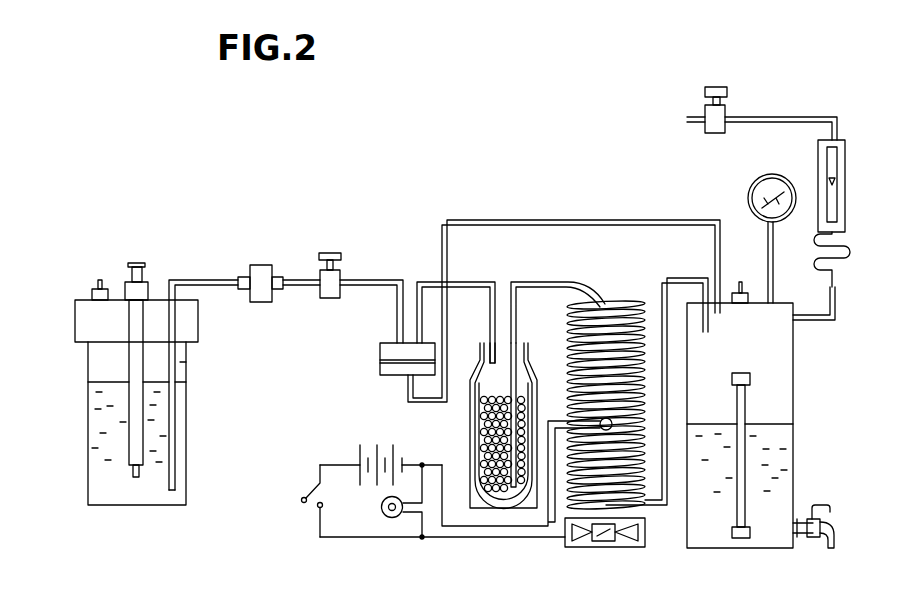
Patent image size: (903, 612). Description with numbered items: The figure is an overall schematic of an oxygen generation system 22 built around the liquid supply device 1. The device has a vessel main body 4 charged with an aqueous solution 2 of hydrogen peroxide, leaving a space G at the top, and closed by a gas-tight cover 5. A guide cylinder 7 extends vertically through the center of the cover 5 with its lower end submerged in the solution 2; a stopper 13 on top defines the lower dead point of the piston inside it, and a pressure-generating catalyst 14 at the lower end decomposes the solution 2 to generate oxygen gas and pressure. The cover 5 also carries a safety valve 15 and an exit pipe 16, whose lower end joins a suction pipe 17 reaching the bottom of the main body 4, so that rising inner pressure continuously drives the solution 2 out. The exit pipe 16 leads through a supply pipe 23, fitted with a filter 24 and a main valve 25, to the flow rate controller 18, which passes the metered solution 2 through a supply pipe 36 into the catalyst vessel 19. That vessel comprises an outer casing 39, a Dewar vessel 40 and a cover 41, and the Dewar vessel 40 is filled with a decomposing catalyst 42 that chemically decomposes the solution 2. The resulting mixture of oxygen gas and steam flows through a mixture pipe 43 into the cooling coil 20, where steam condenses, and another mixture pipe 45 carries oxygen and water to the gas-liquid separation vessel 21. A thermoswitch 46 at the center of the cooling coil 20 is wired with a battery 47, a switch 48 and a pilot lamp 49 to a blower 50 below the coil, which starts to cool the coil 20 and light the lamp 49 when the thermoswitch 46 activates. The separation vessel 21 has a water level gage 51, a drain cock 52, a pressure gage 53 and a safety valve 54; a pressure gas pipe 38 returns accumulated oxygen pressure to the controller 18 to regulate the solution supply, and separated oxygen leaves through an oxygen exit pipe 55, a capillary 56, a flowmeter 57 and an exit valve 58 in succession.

The liquid supply device 1 is at (57, 292).
The aqueous solution 2 is at (98, 462).
The vessel main body 4 is at (88, 362).
The gas-tight cover 5 is at (76, 320).
The guide cylinder 7 is at (130, 358).
The stopper 13 is at (137, 263).
The pressure-generating catalyst 14 is at (137, 478).
The safety valve 15 is at (96, 289).
The exit pipe 16 is at (176, 280).
The suction pipe 17 is at (175, 462).
The space G is at (184, 362).
The flow rate controller 18 is at (380, 353).
The catalyst vessel 19 is at (483, 345).
The cooling coil 20 is at (626, 305).
The gas-liquid separation vessel 21 is at (794, 400).
The oxygen generation system 22 is at (343, 185).
The supply pipe 23 is at (380, 280).
The filter 24 is at (262, 265).
The main valve 25 is at (330, 253).
The supply pipe 36 is at (477, 282).
The pressure gas pipe 38 is at (567, 220).
The outer casing 39 is at (470, 428).
The Dewar vessel 40 is at (528, 505).
The cover 41 is at (498, 350).
The decomposing catalyst 42 is at (496, 503).
The mixture pipe 43 is at (553, 282).
The mixture pipe 45 is at (687, 282).
The thermoswitch 46 is at (610, 430).
The battery 47 is at (375, 444).
The switch 48 is at (303, 497).
The pilot lamp 49 is at (392, 518).
The blower 50 is at (610, 547).
The water level gage 51 is at (737, 402).
The drain cock 52 is at (836, 525).
The pressure gage 53 is at (749, 193).
The safety valve 54 is at (740, 282).
The oxygen exit pipe 55 is at (828, 321).
The capillary 56 is at (848, 258).
The flowmeter 57 is at (846, 168).
The exit valve 58 is at (717, 87).